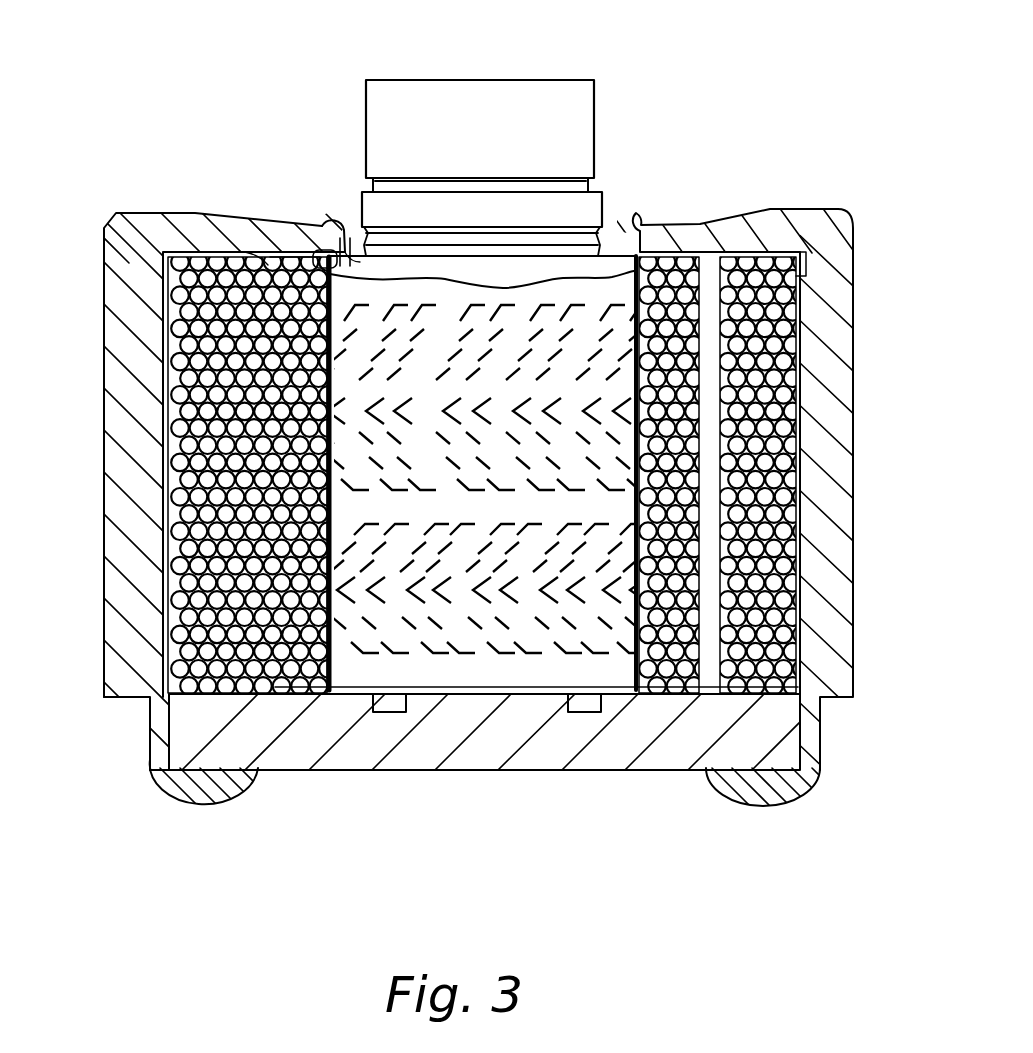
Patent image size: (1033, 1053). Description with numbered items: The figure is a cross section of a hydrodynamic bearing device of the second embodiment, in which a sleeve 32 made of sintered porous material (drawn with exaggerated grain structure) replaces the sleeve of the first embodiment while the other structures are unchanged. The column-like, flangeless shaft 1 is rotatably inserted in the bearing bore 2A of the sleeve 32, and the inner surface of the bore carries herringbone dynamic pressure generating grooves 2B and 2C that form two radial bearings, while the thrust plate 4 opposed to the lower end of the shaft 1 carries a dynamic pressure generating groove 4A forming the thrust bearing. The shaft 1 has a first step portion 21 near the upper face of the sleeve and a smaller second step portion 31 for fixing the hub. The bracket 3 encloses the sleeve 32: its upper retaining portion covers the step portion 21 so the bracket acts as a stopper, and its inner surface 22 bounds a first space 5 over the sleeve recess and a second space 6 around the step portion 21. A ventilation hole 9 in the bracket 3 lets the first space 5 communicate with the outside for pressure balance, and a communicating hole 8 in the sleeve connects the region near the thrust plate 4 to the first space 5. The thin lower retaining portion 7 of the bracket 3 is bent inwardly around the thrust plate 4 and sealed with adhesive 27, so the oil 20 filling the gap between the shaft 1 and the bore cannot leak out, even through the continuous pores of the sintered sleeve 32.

The shaft 1 is at (515, 105).
The oil 20 is at (522, 280).
The second step portion 31 is at (603, 182).
The bracket 3 is at (150, 237).
The inner surface 22 is at (247, 255).
The first space 5 is at (274, 262).
The ventilation hole 9 is at (273, 243).
The first step portion 21 is at (321, 250).
The second space 6 is at (353, 262).
The dynamic pressure generating groove 2B is at (340, 357).
The communicating hole 8 is at (705, 360).
The lower retaining portion 7 is at (195, 790).
The adhesive 27 is at (240, 783).
The sleeve 32 is at (337, 630).
The thrust plate 4 is at (410, 758).
The dynamic pressure generating groove 2C is at (472, 640).
The bearing bore 2A is at (634, 545).
The dynamic pressure generating groove 4A is at (383, 712).